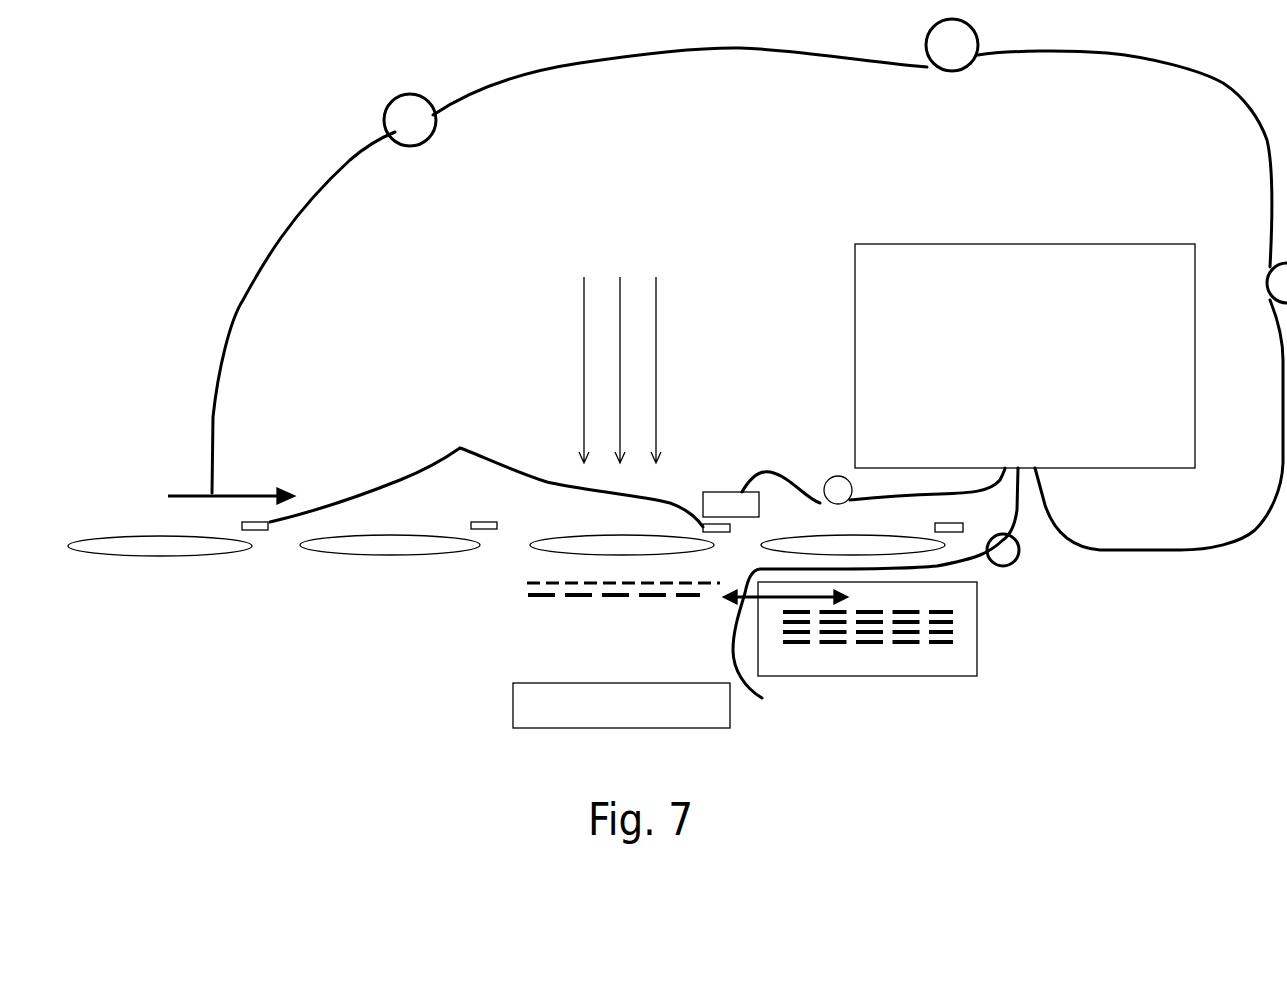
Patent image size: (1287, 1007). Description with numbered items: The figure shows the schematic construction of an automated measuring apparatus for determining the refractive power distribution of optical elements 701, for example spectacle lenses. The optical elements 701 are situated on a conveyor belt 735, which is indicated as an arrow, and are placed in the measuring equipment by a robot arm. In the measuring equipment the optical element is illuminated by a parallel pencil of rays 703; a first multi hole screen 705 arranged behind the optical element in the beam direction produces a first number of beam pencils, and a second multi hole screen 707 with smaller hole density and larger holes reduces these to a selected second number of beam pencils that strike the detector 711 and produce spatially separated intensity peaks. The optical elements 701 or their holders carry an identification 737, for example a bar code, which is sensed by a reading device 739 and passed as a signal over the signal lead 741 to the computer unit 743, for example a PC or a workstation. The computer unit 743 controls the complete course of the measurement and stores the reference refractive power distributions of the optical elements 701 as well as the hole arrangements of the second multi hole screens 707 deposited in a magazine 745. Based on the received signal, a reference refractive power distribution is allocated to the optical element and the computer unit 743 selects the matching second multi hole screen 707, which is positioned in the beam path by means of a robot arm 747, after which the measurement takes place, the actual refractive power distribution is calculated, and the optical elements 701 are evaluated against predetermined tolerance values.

The optical elements 701 is at (553, 555).
The parallel pencil of rays 703 is at (588, 365).
The first multi hole screen 705 is at (527, 583).
The second multi hole screen 707 is at (527, 594).
The detector 711 is at (538, 707).
The conveyor belt 735 is at (245, 493).
The identification 737 is at (479, 517).
The reading device 739 is at (717, 492).
The signal lead 741 is at (783, 468).
The computer unit 743 is at (1022, 262).
The magazine 745 is at (940, 676).
The robot arm 747 is at (785, 667).